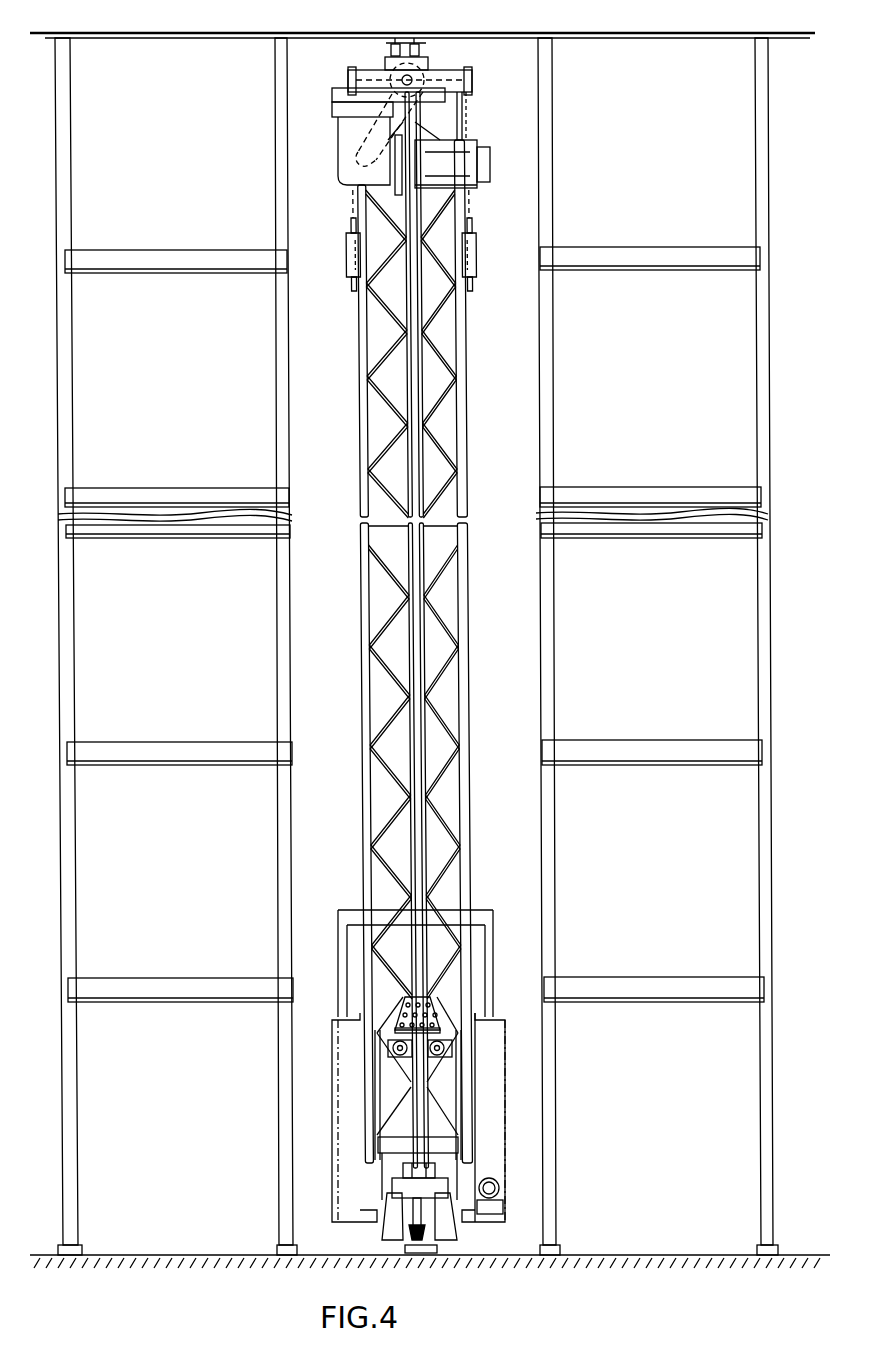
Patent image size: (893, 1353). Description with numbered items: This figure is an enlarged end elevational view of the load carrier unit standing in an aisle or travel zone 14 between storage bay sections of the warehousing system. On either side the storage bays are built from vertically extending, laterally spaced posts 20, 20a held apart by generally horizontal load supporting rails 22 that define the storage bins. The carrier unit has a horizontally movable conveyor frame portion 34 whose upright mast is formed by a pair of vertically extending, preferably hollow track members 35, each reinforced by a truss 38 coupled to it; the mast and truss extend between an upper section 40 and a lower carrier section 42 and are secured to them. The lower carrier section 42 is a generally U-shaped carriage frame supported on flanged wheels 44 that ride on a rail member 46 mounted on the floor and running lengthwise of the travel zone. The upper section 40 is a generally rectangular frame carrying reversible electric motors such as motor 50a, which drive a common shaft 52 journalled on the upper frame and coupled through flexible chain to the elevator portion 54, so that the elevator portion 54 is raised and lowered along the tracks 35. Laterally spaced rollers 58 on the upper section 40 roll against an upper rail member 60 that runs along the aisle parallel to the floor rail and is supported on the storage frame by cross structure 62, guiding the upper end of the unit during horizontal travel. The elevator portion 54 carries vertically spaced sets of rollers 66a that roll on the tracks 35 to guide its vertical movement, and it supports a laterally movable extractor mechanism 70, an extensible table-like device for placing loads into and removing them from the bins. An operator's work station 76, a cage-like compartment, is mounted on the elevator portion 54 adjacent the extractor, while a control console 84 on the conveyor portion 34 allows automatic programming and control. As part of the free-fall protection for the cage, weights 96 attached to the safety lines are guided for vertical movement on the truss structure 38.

The aisle or travel zone 14 is at (548, 76).
The vertically extending post 20 is at (274, 136).
The vertically extending post 20a is at (70, 131).
The load supporting rail 22 is at (202, 262).
The conveyor frame portion 34 is at (478, 498).
The track member 35 is at (438, 432).
The truss 38 is at (462, 720).
The upper section 40 is at (452, 92).
The lower carrier section 42 is at (445, 1182).
The flanged wheel 44 is at (400, 1212).
The rail member 46 is at (432, 1232).
The reversible electric motor 50a is at (466, 183).
The common shaft 52 is at (448, 98).
The elevator portion 54 is at (492, 1024).
The roller 58 is at (428, 44).
The upper rail member 60 is at (386, 39).
The cross structure 62 is at (248, 36).
The rollers 66a is at (572, 1107).
The extractor mechanism 70 is at (360, 1193).
The operator's work station 76 is at (492, 906).
The control console 84 is at (452, 1030).
The weight 96 is at (351, 262).